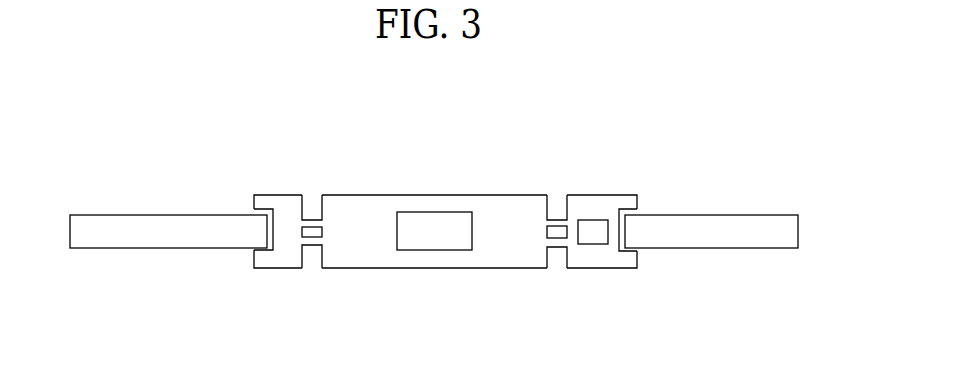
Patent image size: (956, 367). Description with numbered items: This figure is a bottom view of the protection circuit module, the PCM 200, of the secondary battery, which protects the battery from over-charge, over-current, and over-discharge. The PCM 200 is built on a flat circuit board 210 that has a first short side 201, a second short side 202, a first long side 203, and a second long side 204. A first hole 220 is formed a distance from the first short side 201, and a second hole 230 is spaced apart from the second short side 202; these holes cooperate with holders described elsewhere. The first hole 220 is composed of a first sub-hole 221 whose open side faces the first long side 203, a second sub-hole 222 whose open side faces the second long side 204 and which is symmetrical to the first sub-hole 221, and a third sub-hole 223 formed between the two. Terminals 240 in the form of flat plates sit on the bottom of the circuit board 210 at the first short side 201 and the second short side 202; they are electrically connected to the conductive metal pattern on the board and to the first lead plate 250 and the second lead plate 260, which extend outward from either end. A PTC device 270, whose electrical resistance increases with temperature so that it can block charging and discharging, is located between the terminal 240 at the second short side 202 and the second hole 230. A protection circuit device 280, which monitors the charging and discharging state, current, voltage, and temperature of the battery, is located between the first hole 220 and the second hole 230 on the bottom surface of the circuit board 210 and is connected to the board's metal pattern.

The PCM 200 is at (109, 128).
The first short side 201 is at (253, 205).
The second short side 202 is at (638, 204).
The first long side 203 is at (434, 233).
The second long side 204 is at (387, 195).
The circuit board 210 is at (258, 211).
The first hole 220 is at (291, 270).
The first sub-hole 221 is at (323, 280).
The second sub-hole 222 is at (312, 205).
The third sub-hole 223 is at (309, 231).
The second hole 230 is at (558, 207).
The terminals 240 is at (255, 250).
The first lead plate 250 is at (146, 222).
The second lead plate 260 is at (710, 222).
The positive temperature coefficient (PTC) device 270 is at (592, 226).
The protection circuit device 280 is at (448, 242).